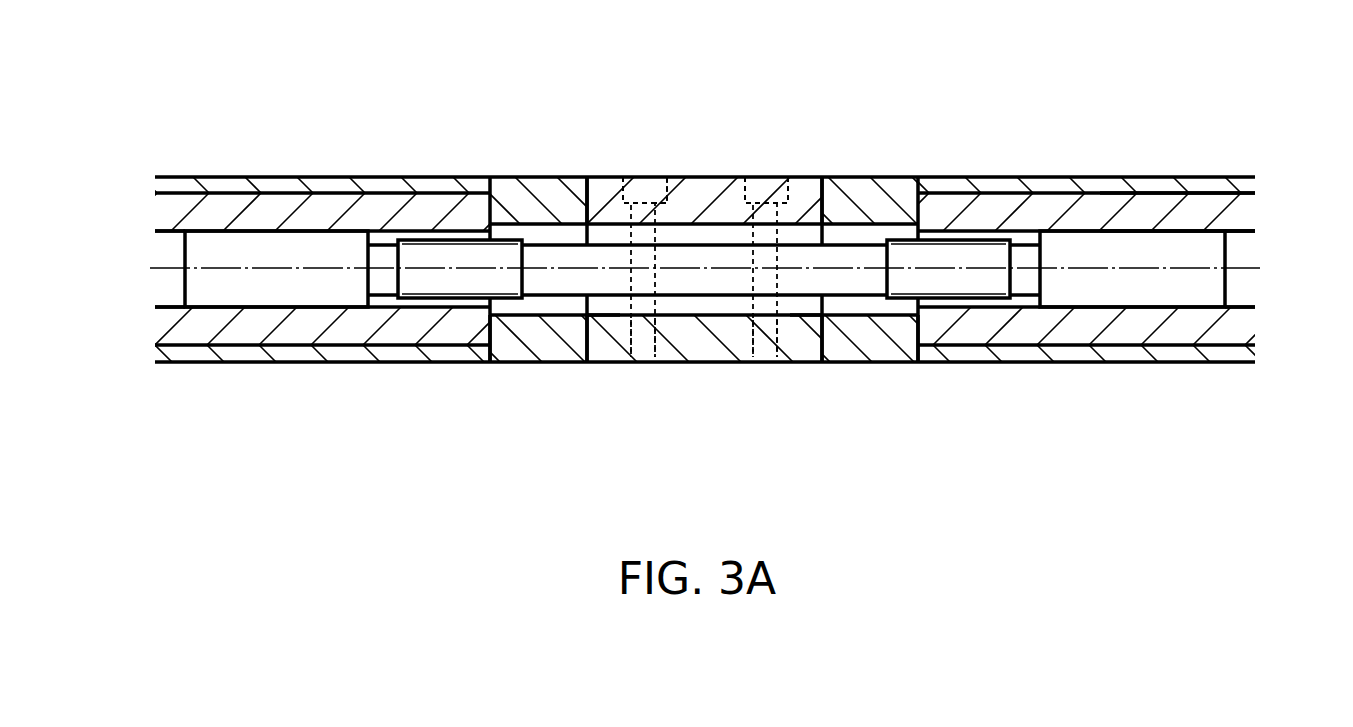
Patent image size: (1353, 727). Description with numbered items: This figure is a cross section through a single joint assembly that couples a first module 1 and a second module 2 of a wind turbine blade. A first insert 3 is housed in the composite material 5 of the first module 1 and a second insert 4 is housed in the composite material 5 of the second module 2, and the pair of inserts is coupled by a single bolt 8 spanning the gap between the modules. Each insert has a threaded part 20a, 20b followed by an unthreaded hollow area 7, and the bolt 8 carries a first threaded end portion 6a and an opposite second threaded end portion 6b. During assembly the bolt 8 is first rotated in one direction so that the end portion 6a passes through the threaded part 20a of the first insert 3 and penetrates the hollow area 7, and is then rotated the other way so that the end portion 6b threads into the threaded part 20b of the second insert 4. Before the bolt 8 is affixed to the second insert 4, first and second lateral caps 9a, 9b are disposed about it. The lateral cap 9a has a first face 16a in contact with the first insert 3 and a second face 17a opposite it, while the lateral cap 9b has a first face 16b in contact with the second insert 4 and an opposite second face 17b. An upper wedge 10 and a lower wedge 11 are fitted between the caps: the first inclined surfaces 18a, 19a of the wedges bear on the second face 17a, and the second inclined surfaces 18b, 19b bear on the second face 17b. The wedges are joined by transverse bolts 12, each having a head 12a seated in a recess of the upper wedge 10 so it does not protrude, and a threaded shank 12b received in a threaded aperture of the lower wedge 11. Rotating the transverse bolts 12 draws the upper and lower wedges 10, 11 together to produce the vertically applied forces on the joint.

The first module 1 is at (355, 177).
The second module 2 is at (1072, 177).
The first insert 3 is at (257, 217).
The second insert 4 is at (1167, 215).
The composite material 5 is at (170, 287).
The first threaded end portion 6a is at (449, 262).
The second threaded end portion 6b is at (952, 257).
The unthreaded hollow area 7 is at (283, 287).
The bolt 8 is at (843, 283).
The first lateral cap 9a is at (525, 197).
The second lateral cap 9b is at (872, 200).
The upper wedge 10 is at (707, 217).
The lower wedge 11 is at (710, 330).
The transverse bolt 12 is at (643, 195).
The head 12a is at (670, 190).
The threaded shank 12b is at (756, 334).
The first face 16a is at (490, 358).
The first face 16b is at (918, 358).
The second face 17a is at (587, 352).
The second face 17b is at (822, 352).
The first inclined surface 18a is at (587, 186).
The second inclined surface 18b is at (822, 190).
The first inclined surface 19a is at (587, 350).
The second inclined surface 19b is at (822, 360).
The threaded part 20a is at (388, 298).
The threaded part 20b is at (1023, 300).